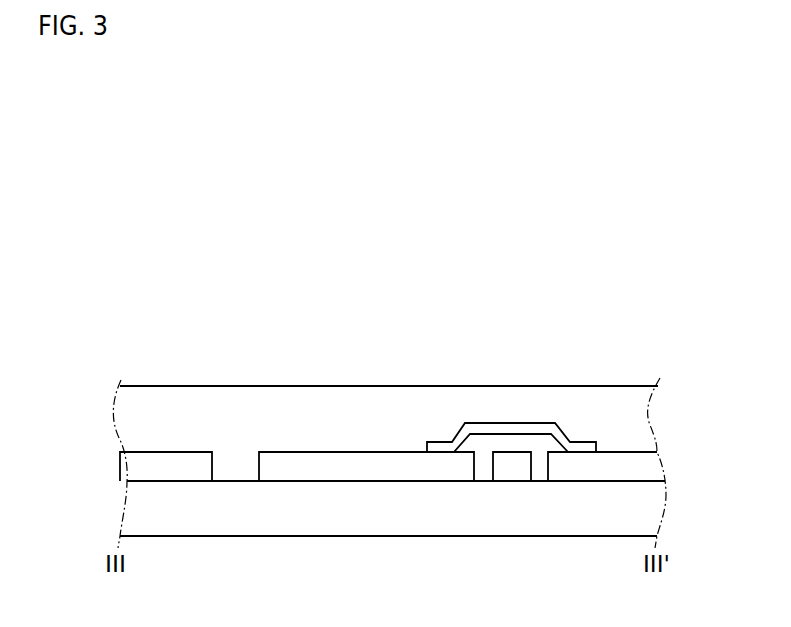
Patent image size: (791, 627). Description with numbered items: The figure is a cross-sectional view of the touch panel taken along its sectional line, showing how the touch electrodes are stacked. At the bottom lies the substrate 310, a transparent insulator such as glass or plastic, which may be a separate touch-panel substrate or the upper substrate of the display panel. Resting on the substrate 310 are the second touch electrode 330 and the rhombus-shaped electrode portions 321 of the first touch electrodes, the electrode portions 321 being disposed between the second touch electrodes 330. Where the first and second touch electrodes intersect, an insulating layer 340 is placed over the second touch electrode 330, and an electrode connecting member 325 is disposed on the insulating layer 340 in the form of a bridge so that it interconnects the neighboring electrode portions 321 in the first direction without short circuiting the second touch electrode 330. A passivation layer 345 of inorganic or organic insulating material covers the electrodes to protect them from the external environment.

The substrate 310 is at (188, 536).
The rhombus-shaped electrode portion 321 is at (380, 460).
The electrode connecting member 325 is at (475, 424).
The second touch electrode 330 is at (162, 458).
The insulating layer 340 is at (540, 447).
The passivation layer 345 is at (268, 407).